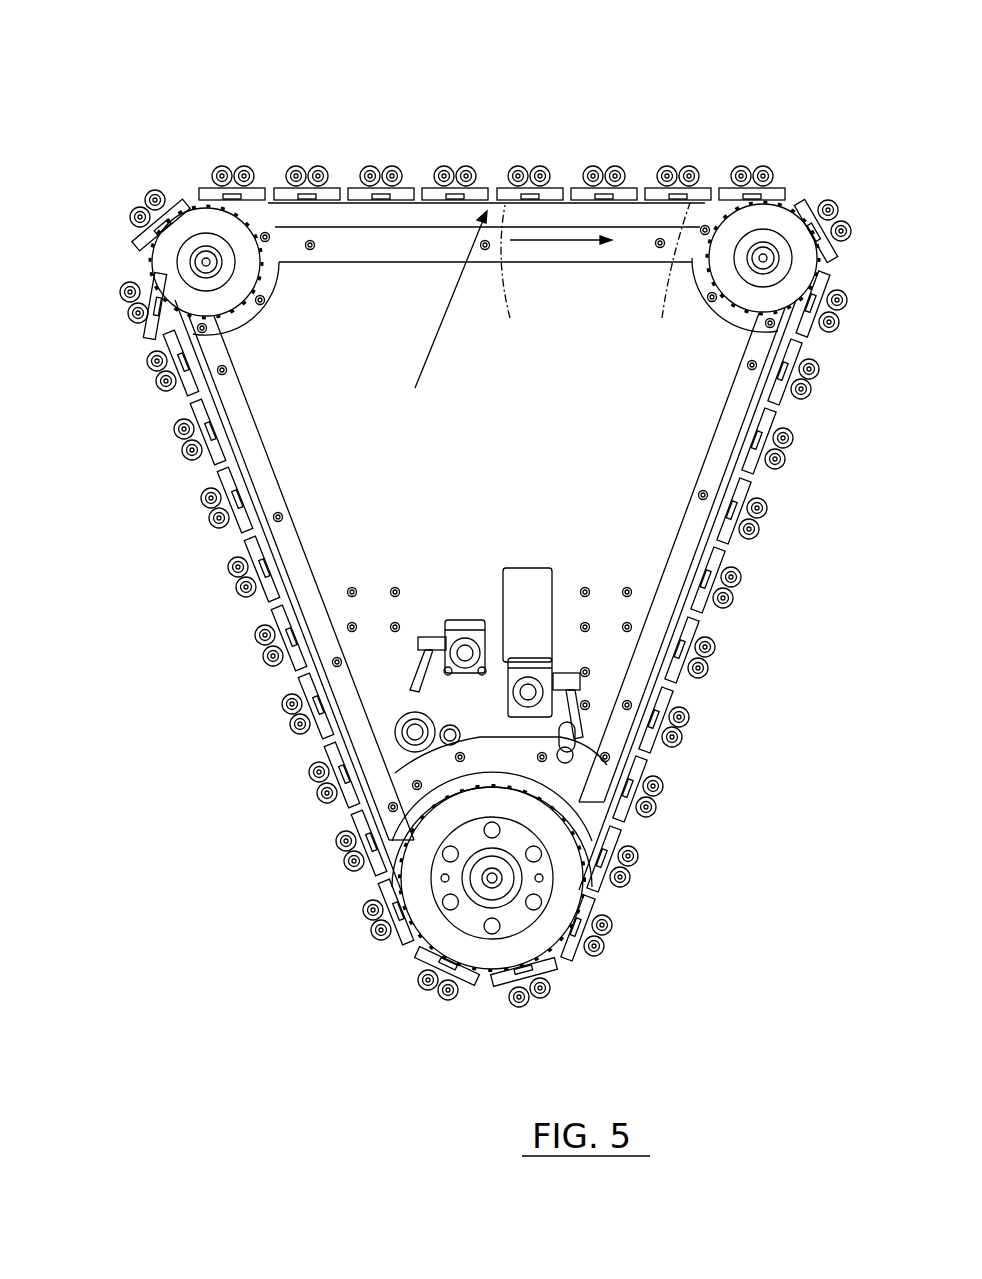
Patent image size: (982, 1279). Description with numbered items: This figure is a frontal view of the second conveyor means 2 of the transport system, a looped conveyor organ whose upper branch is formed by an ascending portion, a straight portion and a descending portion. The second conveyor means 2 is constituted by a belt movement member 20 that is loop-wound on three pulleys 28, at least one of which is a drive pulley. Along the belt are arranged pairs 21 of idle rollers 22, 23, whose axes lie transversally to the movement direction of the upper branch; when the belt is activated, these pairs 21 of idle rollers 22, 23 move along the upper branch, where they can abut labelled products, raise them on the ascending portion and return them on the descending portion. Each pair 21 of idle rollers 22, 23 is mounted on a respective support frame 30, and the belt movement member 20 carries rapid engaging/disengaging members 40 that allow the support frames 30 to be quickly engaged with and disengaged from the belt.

The second conveyor means 2 is at (156, 698).
The belt movement member 20 is at (436, 506).
The pair of idle rollers 21 is at (270, 168).
The idle roller 22 is at (295, 178).
The idle roller 23 is at (323, 172).
The pulley 28 is at (158, 252).
The support frame 30 is at (283, 205).
The rapid engaging/disengaging member 40 is at (312, 197).